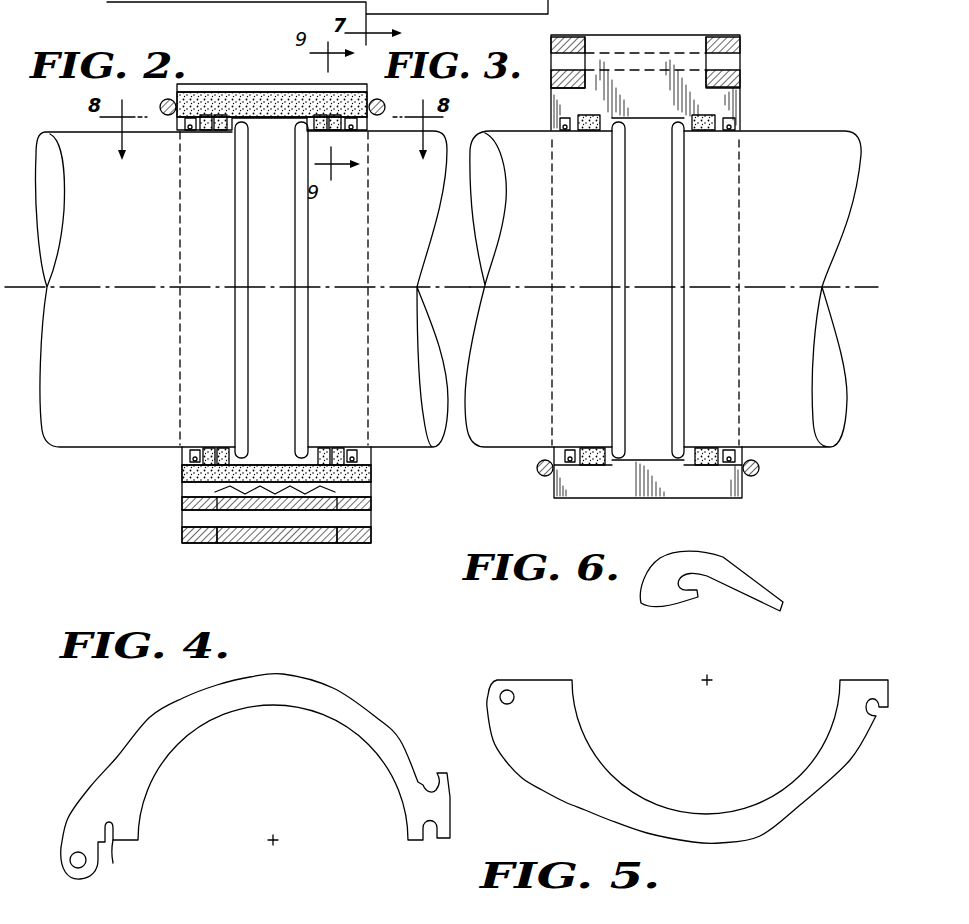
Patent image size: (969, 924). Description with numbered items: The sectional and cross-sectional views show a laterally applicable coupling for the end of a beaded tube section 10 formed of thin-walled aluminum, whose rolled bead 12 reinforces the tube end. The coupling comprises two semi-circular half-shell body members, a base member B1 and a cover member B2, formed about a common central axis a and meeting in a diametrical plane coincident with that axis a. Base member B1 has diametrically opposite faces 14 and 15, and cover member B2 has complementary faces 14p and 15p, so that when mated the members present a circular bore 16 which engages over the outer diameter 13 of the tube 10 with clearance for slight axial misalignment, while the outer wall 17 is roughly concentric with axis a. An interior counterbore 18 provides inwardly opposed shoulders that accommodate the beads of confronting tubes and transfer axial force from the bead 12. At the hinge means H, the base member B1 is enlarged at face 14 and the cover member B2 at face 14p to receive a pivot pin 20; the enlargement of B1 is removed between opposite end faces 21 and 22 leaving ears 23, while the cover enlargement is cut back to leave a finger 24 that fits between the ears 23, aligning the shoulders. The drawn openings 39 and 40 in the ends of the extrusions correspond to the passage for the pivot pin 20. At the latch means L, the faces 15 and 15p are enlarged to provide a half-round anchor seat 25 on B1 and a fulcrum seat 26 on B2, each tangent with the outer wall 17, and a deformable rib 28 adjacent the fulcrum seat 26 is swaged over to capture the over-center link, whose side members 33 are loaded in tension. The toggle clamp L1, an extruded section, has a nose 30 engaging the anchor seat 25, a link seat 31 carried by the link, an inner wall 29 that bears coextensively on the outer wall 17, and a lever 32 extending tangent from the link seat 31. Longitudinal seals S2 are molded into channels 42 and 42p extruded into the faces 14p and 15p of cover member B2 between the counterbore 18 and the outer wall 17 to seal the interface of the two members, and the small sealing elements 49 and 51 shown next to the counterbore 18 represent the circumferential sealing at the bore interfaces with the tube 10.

In FIG. 2, the beaded tube section 10 is at (241, 289).
In FIG. 3, the beaded tube section 10 is at (663, 289).
In FIG. 2, the bead 12 is at (297, 137).
In FIG. 3, the bead 12 is at (618, 168).
In FIG. 2, the outer diameter 13 is at (193, 3).
In FIG. 3, the face 14 is at (645, 94).
In FIG. 5, the face 14 is at (552, 680).
In FIG. 2, the face 14p is at (304, 90).
In FIG. 4, the face 14p is at (118, 843).
In FIG. 3, the face 15 is at (647, 479).
In FIG. 5, the face 15 is at (862, 680).
In FIG. 2, the face 15p is at (186, 490).
In FIG. 4, the face 15p is at (410, 845).
In FIG. 4, the circular bore 16 is at (262, 708).
In FIG. 5, the circular bore 16 is at (652, 808).
In FIG. 4, the outer wall 17 is at (313, 680).
In FIG. 5, the outer wall 17 is at (812, 802).
In FIG. 2, the interior counterbore 18 is at (268, 449).
In FIG. 3, the interior counterbore 18 is at (650, 122).
In FIG. 2, the pivot pin 20 is at (310, 522).
In FIG. 3, the pivot pin 20 is at (655, 53).
In FIG. 2, the end face 21 is at (182, 541).
In FIG. 3, the end face 21 is at (551, 100).
In FIG. 2, the end face 22 is at (372, 505).
In FIG. 3, the end face 22 is at (742, 45).
In FIG. 2, the ears 23 is at (348, 545).
In FIG. 3, the ears 23 is at (575, 45).
In FIG. 2, the finger 24 is at (243, 547).
In FIG. 5, the anchor seat 25 is at (872, 707).
In FIG. 4, the fulcrum seat 26 is at (443, 783).
In FIG. 4, the deformable rib 28 is at (447, 770).
In FIG. 6, the inner wall 29 is at (673, 606).
In FIG. 6, the nose 30 is at (643, 605).
In FIG. 6, the link seat 31 is at (686, 585).
In FIG. 6, the lever 32 is at (780, 600).
In FIG. 2, the side members 33 is at (385, 103).
In FIG. 3, the side members 33 is at (537, 472).
In FIG. 4, the pivot hole 39 is at (62, 860).
In FIG. 5, the pivot hole 40 is at (497, 680).
In FIG. 4, the channel 42 is at (122, 864).
In FIG. 4, the channel 42p is at (431, 848).
In FIG. 2, the seal element 49 is at (192, 447).
In FIG. 3, the seal element 49 is at (745, 120).
In FIG. 2, the seal ring 51 is at (204, 136).
In FIG. 3, the seal ring 51 is at (718, 129).
In FIG. 2, the central axis a is at (138, 283).
In FIG. 3, the central axis a is at (762, 285).
In FIG. 4, the central axis a is at (282, 836).
In FIG. 5, the central axis a is at (715, 682).
In FIG. 3, the base member B1 is at (750, 92).
In FIG. 5, the base member B1 is at (712, 844).
In FIG. 2, the cover member B2 is at (249, 80).
In FIG. 4, the cover member B2 is at (182, 693).
In FIG. 2, the hinge means H is at (176, 507).
In FIG. 3, the hinge means H is at (750, 57).
In FIG. 3, the latch means L is at (762, 466).
In FIG. 6, the toggle clamp L1 is at (750, 582).
In FIG. 2, the longitudinal seals S2 is at (372, 478).